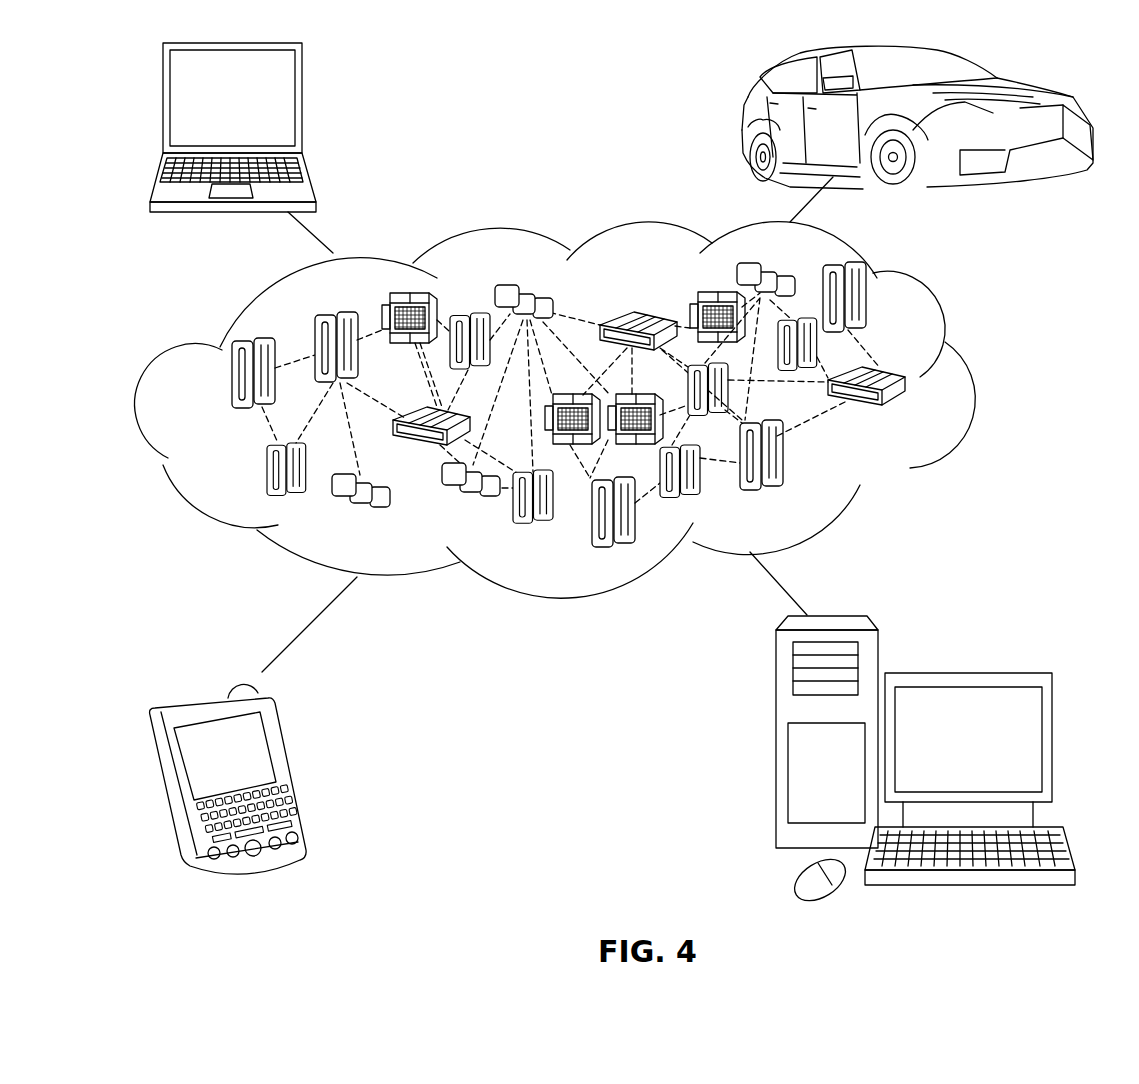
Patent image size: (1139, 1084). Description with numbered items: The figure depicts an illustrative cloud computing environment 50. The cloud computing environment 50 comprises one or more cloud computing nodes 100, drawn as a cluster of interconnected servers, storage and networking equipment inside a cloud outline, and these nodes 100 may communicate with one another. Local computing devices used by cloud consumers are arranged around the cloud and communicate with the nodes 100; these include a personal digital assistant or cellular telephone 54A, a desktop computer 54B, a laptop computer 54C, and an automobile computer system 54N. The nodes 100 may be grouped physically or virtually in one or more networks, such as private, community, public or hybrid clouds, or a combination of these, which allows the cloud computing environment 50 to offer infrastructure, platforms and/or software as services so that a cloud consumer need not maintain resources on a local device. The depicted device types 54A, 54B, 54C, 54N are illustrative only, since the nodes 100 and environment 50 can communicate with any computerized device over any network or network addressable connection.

The cloud computing environment 50 is at (967, 383).
The cloud computing nodes 100 is at (908, 412).
The personal digital assistant or cellular telephone 54A is at (292, 770).
The desktop computer 54B is at (965, 673).
The laptop computer 54C is at (302, 106).
The automobile computer system 54N is at (743, 120).